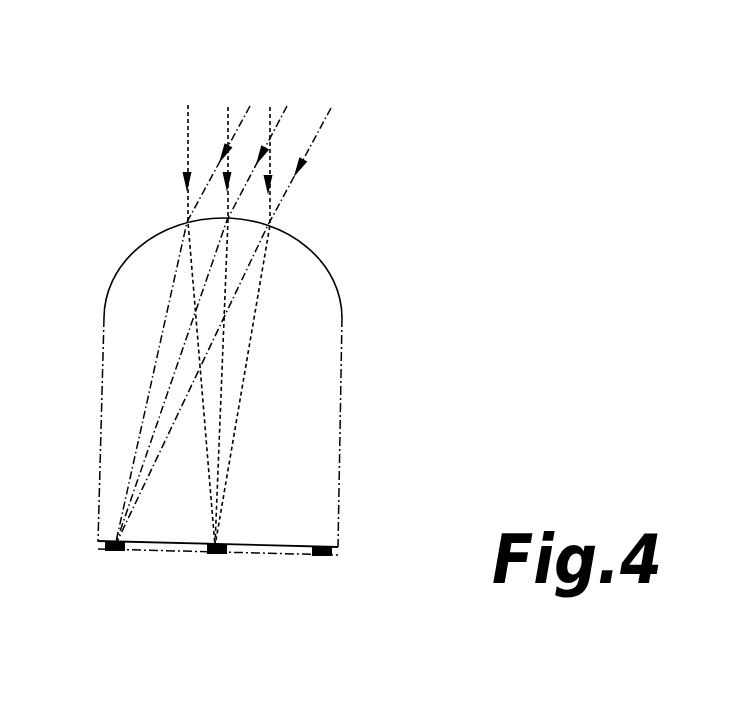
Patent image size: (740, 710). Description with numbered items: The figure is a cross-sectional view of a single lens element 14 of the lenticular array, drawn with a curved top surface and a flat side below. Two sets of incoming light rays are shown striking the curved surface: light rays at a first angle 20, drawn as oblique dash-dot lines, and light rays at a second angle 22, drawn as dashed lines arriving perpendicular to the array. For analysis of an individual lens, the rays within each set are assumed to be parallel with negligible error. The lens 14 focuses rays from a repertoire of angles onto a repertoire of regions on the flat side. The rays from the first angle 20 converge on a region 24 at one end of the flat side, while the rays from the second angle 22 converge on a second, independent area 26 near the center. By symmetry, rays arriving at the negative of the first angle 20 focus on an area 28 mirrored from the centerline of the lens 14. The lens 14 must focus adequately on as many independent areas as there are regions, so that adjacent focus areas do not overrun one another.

The lens element 14 is at (330, 270).
The light rays at a first angle 20 is at (250, 106).
The light rays at a second angle 22 is at (270, 107).
The region 24 is at (112, 552).
The second area 26 is at (212, 555).
The area 28 is at (318, 555).